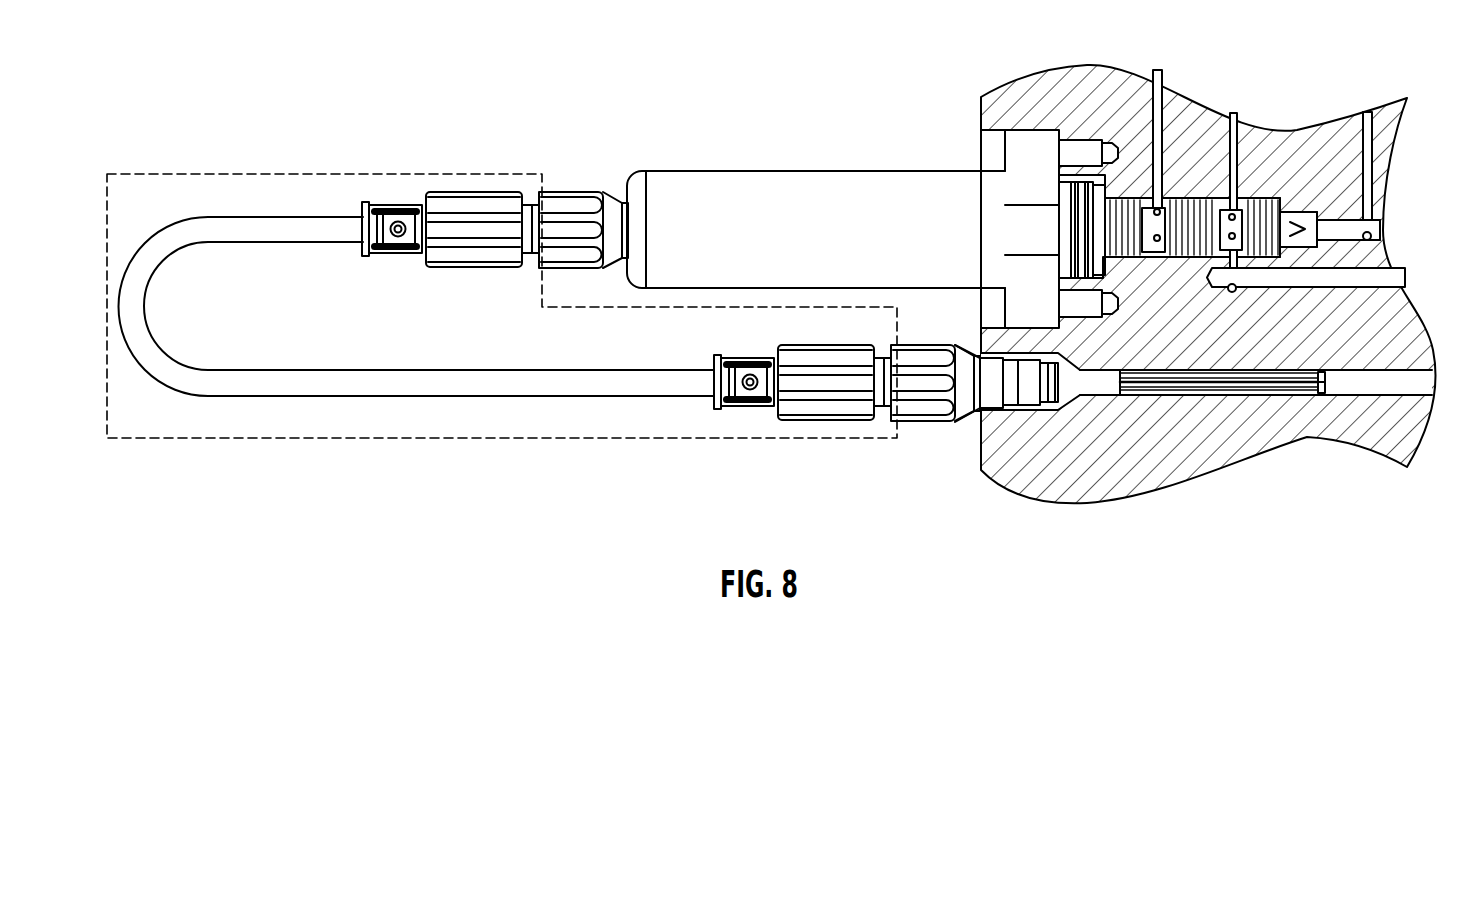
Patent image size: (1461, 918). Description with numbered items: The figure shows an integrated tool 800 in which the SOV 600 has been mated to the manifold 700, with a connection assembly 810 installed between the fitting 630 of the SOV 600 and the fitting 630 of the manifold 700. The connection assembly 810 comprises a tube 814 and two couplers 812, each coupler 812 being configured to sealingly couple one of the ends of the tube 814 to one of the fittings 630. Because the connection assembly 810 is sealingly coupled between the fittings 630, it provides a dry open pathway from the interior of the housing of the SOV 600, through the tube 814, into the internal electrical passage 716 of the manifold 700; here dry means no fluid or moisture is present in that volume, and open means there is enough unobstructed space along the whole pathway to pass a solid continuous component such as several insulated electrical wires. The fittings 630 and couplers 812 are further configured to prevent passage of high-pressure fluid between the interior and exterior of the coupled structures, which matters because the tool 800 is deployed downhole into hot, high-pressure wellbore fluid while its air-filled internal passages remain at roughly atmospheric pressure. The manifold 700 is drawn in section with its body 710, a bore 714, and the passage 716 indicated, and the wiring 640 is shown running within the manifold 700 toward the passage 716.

The integrated tool 800 is at (188, 78).
The connection assembly 810 is at (287, 173).
The tube 814 is at (177, 232).
The coupler 812 is at (483, 229).
The fitting 630 is at (563, 218).
The SOV 600 is at (767, 162).
The manifold 700 is at (1188, 278).
The manifold body 710 is at (1320, 188).
The bore 714 is at (1375, 280).
The internal electrical passage 716 is at (1222, 395).
The cable 640 is at (1170, 382).